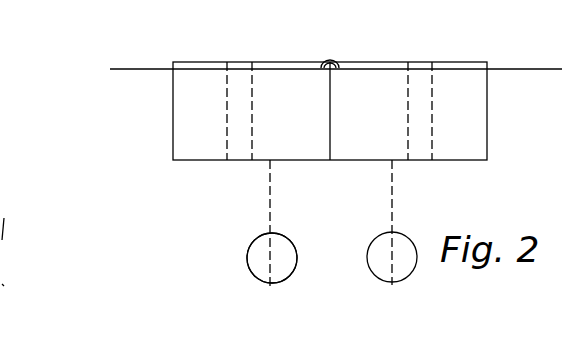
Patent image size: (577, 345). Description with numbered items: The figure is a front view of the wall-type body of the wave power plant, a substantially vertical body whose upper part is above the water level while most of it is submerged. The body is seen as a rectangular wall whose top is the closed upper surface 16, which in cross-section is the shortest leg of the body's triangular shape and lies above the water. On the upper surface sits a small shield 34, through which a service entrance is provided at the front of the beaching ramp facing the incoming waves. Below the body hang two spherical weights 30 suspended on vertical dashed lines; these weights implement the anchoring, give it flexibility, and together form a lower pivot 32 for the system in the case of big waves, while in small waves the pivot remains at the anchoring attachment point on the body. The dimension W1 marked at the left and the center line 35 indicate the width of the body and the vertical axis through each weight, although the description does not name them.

The upper surface 16 is at (383, 60).
The shield 34 is at (328, 59).
The width W1 is at (113, 71).
The center axis 35 is at (268, 186).
The lower pivot 32 is at (272, 230).
The weights 30 is at (257, 257).